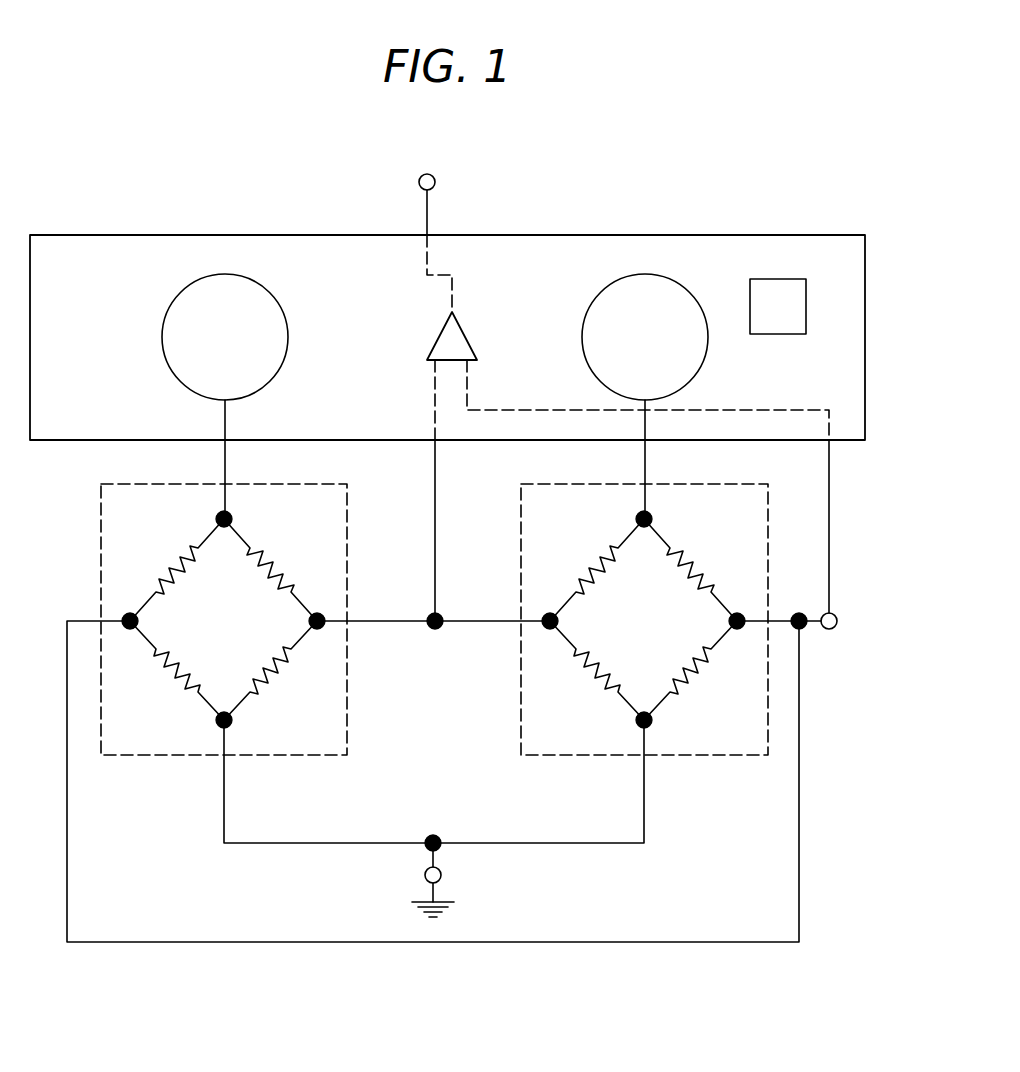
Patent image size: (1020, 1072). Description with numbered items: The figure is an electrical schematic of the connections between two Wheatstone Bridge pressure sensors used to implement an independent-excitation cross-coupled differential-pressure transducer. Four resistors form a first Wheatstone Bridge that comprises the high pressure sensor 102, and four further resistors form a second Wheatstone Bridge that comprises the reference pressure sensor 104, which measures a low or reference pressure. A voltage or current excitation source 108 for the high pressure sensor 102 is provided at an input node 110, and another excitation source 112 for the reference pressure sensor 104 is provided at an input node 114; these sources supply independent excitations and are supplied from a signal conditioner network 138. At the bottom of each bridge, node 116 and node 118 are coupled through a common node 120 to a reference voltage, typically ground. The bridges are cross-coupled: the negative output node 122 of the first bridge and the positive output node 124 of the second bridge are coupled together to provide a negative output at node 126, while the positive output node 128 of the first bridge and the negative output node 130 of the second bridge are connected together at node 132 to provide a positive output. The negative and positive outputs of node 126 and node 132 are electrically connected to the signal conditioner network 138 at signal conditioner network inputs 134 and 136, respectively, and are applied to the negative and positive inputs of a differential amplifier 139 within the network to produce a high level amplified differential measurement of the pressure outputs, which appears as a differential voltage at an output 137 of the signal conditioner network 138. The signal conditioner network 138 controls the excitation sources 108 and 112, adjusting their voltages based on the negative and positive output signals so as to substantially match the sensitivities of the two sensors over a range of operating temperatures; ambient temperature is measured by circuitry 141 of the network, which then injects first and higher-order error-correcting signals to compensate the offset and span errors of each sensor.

The high pressure sensor 102 is at (145, 757).
The reference pressure sensor 104 is at (735, 757).
The excitation source 108 is at (173, 321).
The input node 110 is at (218, 516).
The excitation source 112 is at (702, 332).
The input node 114 is at (638, 517).
The node 116 is at (232, 724).
The node 118 is at (690, 714).
The node 120 is at (441, 875).
The negative output node 122 is at (312, 619).
The positive output node 124 is at (558, 623).
The node 126 is at (433, 618).
The positive output node 128 is at (140, 620).
The negative output node 130 is at (730, 620).
The node 132 is at (806, 624).
The signal conditioner network input 134 is at (432, 440).
The signal conditioner network input 136 is at (834, 440).
The output 137 is at (427, 210).
The signal conditioner network 138 is at (865, 278).
The differential amplifier 139 is at (440, 340).
The circuitry 141 is at (785, 284).